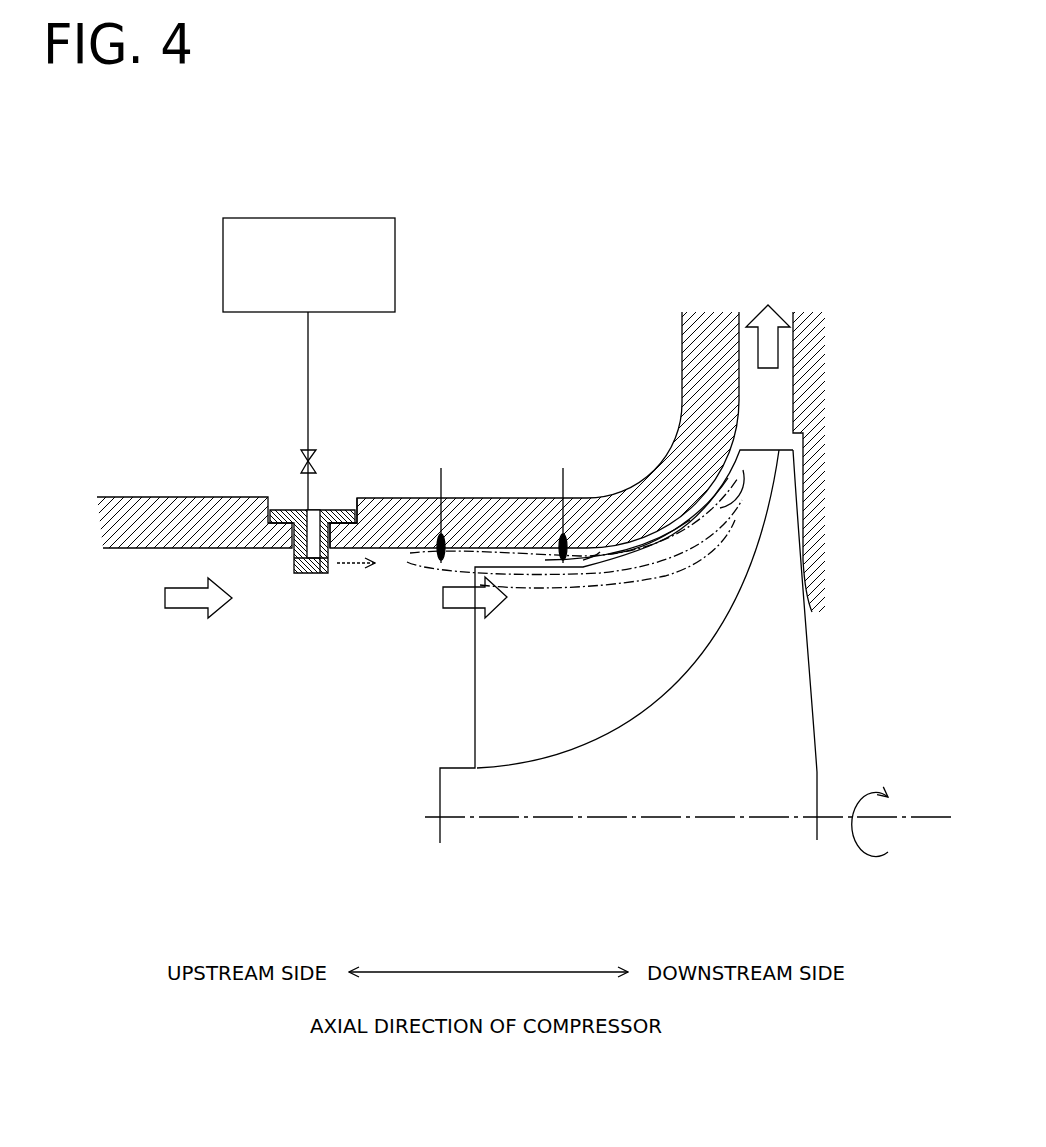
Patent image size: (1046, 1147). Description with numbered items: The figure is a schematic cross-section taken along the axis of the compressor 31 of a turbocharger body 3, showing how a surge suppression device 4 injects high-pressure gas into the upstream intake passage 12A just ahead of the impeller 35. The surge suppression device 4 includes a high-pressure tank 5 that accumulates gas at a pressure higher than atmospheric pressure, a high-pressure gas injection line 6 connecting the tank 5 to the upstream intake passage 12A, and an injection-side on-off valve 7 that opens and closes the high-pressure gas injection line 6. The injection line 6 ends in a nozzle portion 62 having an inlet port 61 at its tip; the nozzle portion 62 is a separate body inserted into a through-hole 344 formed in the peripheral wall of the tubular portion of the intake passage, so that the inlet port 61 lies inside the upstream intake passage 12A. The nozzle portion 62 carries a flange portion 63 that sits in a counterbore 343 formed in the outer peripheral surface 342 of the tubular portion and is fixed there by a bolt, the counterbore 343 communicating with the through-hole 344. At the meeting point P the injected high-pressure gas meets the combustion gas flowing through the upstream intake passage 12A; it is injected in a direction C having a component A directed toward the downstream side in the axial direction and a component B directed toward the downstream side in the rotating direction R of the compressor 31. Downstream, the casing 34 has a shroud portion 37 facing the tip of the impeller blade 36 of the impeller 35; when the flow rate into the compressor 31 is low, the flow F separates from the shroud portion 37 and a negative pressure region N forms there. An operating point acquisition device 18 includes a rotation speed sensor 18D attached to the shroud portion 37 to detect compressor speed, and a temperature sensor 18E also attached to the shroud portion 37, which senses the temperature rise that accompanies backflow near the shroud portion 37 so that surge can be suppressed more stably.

The turbocharger body 3 is at (461, 465).
The surge suppression device 4 is at (309, 225).
The high-pressure tank 5 is at (344, 218).
The high-pressure gas injection line 6 is at (311, 355).
The injection-side on-off valve 7 is at (314, 462).
The upstream intake passage 12A is at (130, 550).
The outer peripheral surface 342 is at (482, 498).
The counterbore 343 is at (352, 498).
The through-hole 344 is at (285, 550).
The inlet port 61 is at (322, 573).
The nozzle portion 62 is at (305, 575).
The flange portion 63 is at (297, 556).
The operating point acquisition device 18 is at (496, 472).
The temperature sensor 18E is at (441, 468).
The rotation speed sensor 18D is at (563, 468).
The compressor 31 is at (645, 666).
The casing 34 is at (628, 548).
The impeller 35 is at (785, 735).
The impeller blade 36 is at (670, 640).
The shroud portion 37 is at (545, 560).
The negative pressure region N is at (583, 560).
The meeting point P is at (340, 568).
The flow F is at (452, 608).
The rotating direction R is at (890, 793).
The component A is at (548, 606).
The component B is at (574, 537).
The direction C is at (607, 554).